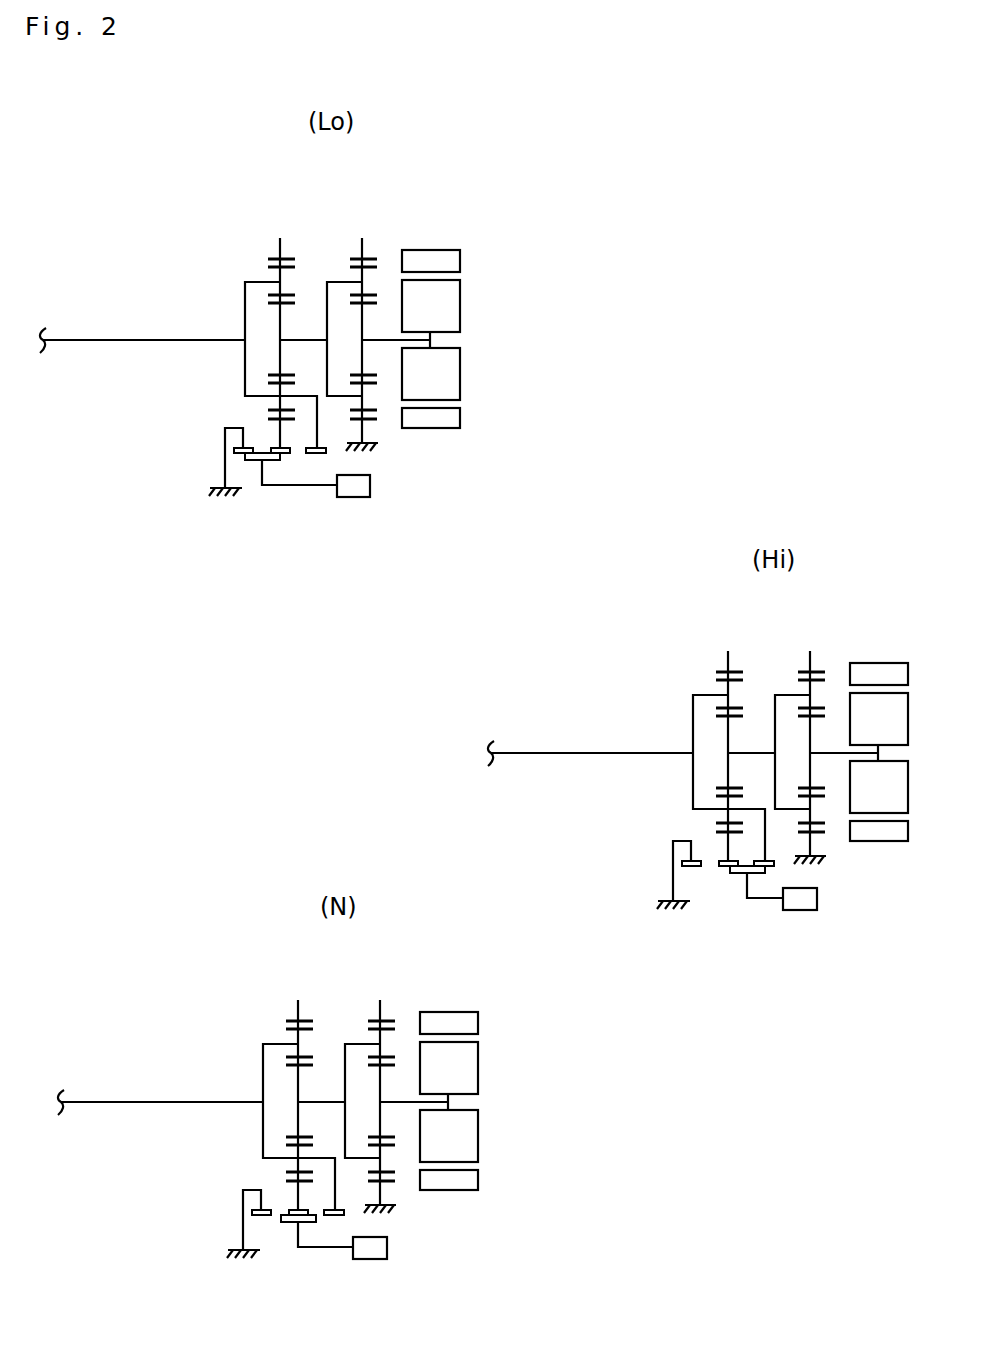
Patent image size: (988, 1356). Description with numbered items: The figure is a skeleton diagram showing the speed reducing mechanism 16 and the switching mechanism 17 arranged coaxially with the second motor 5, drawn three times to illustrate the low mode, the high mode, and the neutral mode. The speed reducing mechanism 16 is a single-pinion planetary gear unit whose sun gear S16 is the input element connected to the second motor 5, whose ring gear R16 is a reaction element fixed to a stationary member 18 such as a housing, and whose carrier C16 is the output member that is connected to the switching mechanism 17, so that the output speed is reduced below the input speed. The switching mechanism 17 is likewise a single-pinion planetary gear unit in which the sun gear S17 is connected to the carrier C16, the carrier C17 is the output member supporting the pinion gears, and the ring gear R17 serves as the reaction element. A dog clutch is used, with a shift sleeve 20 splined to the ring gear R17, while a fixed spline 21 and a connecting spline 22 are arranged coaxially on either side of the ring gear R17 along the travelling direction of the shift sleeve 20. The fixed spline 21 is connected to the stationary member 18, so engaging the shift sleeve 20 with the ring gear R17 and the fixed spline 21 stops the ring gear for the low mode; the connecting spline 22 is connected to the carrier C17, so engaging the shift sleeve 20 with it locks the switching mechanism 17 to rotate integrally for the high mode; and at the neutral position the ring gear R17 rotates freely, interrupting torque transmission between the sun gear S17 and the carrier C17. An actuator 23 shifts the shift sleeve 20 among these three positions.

The second motor 5 is at (462, 310).
The speed reducing mechanism 16 is at (585, 686).
The switching mechanism 17 is at (469, 693).
The stationary member 18 is at (372, 448).
The shift sleeve 20 is at (253, 462).
The fixed spline 21 is at (237, 458).
The connecting spline 22 is at (313, 455).
The actuator 23 is at (353, 497).
The ring gear R16 is at (353, 258).
The carrier C16 is at (332, 282).
The sun gear S16 is at (373, 370).
The ring gear R17 is at (270, 422).
The carrier C17 is at (245, 284).
The sun gear S17 is at (270, 303).